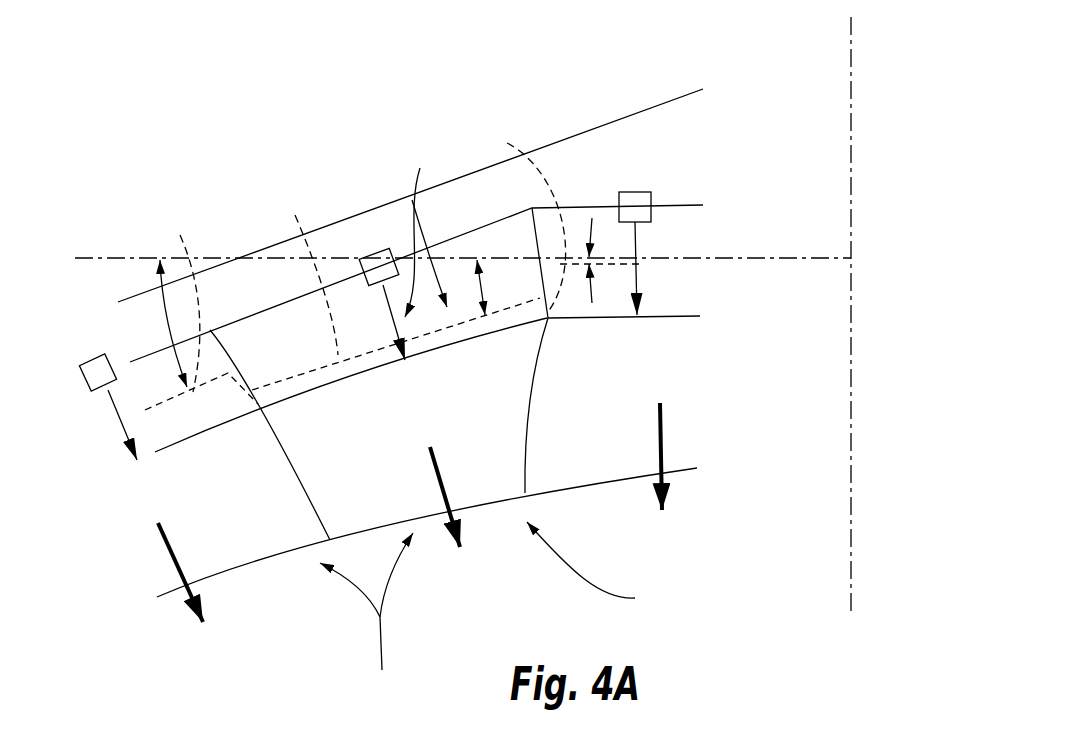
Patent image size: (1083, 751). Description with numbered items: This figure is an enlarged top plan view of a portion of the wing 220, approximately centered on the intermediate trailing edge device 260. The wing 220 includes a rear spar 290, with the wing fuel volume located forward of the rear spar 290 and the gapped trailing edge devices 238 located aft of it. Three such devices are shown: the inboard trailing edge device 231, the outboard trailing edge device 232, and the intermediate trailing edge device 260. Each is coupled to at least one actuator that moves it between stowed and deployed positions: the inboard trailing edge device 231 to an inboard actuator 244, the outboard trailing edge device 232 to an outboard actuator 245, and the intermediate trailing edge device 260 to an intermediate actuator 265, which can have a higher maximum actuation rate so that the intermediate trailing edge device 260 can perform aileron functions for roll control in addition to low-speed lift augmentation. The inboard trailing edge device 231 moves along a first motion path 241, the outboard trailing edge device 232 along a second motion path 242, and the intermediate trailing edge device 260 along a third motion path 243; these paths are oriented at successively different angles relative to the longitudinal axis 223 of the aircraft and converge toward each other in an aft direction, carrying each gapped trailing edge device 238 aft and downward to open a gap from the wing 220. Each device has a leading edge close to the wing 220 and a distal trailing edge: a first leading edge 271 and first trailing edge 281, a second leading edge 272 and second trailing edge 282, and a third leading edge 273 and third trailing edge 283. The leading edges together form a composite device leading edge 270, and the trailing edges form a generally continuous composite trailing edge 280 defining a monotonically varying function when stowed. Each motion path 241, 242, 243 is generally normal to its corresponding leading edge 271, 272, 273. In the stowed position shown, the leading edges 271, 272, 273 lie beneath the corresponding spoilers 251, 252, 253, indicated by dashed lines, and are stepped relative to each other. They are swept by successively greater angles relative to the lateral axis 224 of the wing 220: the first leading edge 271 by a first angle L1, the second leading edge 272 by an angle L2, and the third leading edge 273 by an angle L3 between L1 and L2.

The wing 220 is at (287, 148).
The rear spar 290 is at (646, 110).
The longitudinal axis 223 is at (850, 101).
The lateral axis 224 is at (735, 257).
The spoiler 251 is at (695, 247).
The spoiler 252 is at (174, 396).
The spoiler 253 is at (298, 349).
The inboard actuator 244 is at (638, 192).
The outboard actuator 245 is at (80, 370).
The intermediate actuator 265 is at (377, 250).
The intermediate trailing edge device 260 is at (401, 452).
The inboard trailing edge device 231 is at (624, 419).
The outboard trailing edge device 232 is at (214, 534).
The first motion path 241 is at (663, 437).
The second motion path 242 is at (170, 560).
The third motion path 243 is at (442, 468).
The composite device leading edge 270 is at (426, 230).
The first leading edge 271 is at (555, 218).
The second leading edge 272 is at (170, 305).
The third leading edge 273 is at (310, 275).
The composite trailing edge 280 is at (366, 617).
The first trailing edge 281 is at (582, 487).
The second trailing edge 282 is at (233, 572).
The third trailing edge 283 is at (485, 505).
The gapped trailing edge device 238 is at (602, 568).
The first angle L1 is at (592, 222).
The angle L2 is at (163, 320).
The angle L3 is at (481, 286).